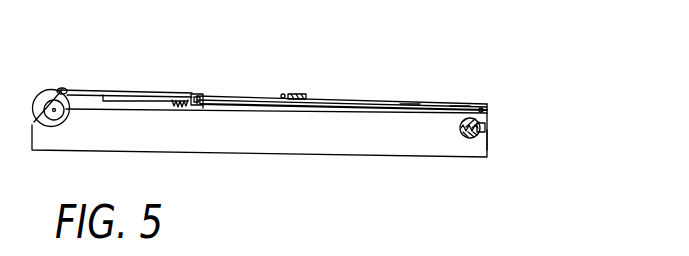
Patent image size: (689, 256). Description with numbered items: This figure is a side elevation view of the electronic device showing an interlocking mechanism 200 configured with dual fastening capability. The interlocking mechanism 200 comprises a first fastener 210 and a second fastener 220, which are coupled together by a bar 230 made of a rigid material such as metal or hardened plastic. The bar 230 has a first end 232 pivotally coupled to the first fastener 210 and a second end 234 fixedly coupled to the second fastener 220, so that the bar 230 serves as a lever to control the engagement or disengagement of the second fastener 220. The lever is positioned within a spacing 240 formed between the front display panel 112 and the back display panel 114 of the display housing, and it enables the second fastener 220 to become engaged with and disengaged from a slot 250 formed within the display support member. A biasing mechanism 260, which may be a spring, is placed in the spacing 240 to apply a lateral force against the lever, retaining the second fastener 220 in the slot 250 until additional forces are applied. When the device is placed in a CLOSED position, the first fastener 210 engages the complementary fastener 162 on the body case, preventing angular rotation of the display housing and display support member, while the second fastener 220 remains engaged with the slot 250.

The front display panel 112 is at (421, 114).
The back display panel 114 is at (411, 101).
The complementary fastener 162 is at (494, 138).
The interlocking mechanism 200 is at (465, 96).
The first fastener 210 is at (493, 116).
The second fastener 220 is at (208, 93).
The bar 230 is at (382, 98).
The first end 232 is at (492, 101).
The second end 234 is at (204, 107).
The spacing 240 is at (336, 116).
The slot 250 is at (192, 92).
The biasing mechanism 260 is at (183, 110).